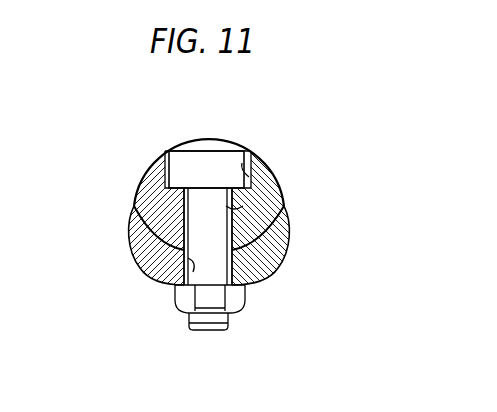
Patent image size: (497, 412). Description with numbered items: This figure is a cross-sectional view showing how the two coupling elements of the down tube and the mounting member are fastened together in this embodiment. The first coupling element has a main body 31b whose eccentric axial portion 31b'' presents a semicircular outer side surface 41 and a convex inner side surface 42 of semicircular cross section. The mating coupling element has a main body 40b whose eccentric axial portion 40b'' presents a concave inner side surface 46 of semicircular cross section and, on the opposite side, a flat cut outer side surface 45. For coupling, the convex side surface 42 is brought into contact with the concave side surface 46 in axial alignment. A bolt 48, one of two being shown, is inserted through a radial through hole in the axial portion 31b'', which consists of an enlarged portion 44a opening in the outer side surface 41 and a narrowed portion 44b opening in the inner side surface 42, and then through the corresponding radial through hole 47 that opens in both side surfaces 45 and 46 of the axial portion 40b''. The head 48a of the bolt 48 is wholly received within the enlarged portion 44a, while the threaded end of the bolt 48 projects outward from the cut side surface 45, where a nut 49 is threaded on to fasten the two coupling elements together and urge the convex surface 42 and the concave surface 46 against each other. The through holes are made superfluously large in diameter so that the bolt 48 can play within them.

The head 48a is at (217, 163).
The axial portion 31b'' is at (174, 158).
The main body 31b is at (132, 218).
The enlarged portion 44a is at (250, 157).
The narrowed portion 44b is at (232, 205).
The main body 40b is at (323, 216).
The inner side surface 46 is at (254, 240).
The axial portion 40b'' is at (318, 268).
The inner side surface 42 is at (264, 272).
The outer side surface 45 is at (252, 288).
The nut 49 is at (231, 308).
The bolt 48 is at (207, 275).
The radial through hole 47 is at (195, 268).
The outer side surface 41 is at (145, 263).